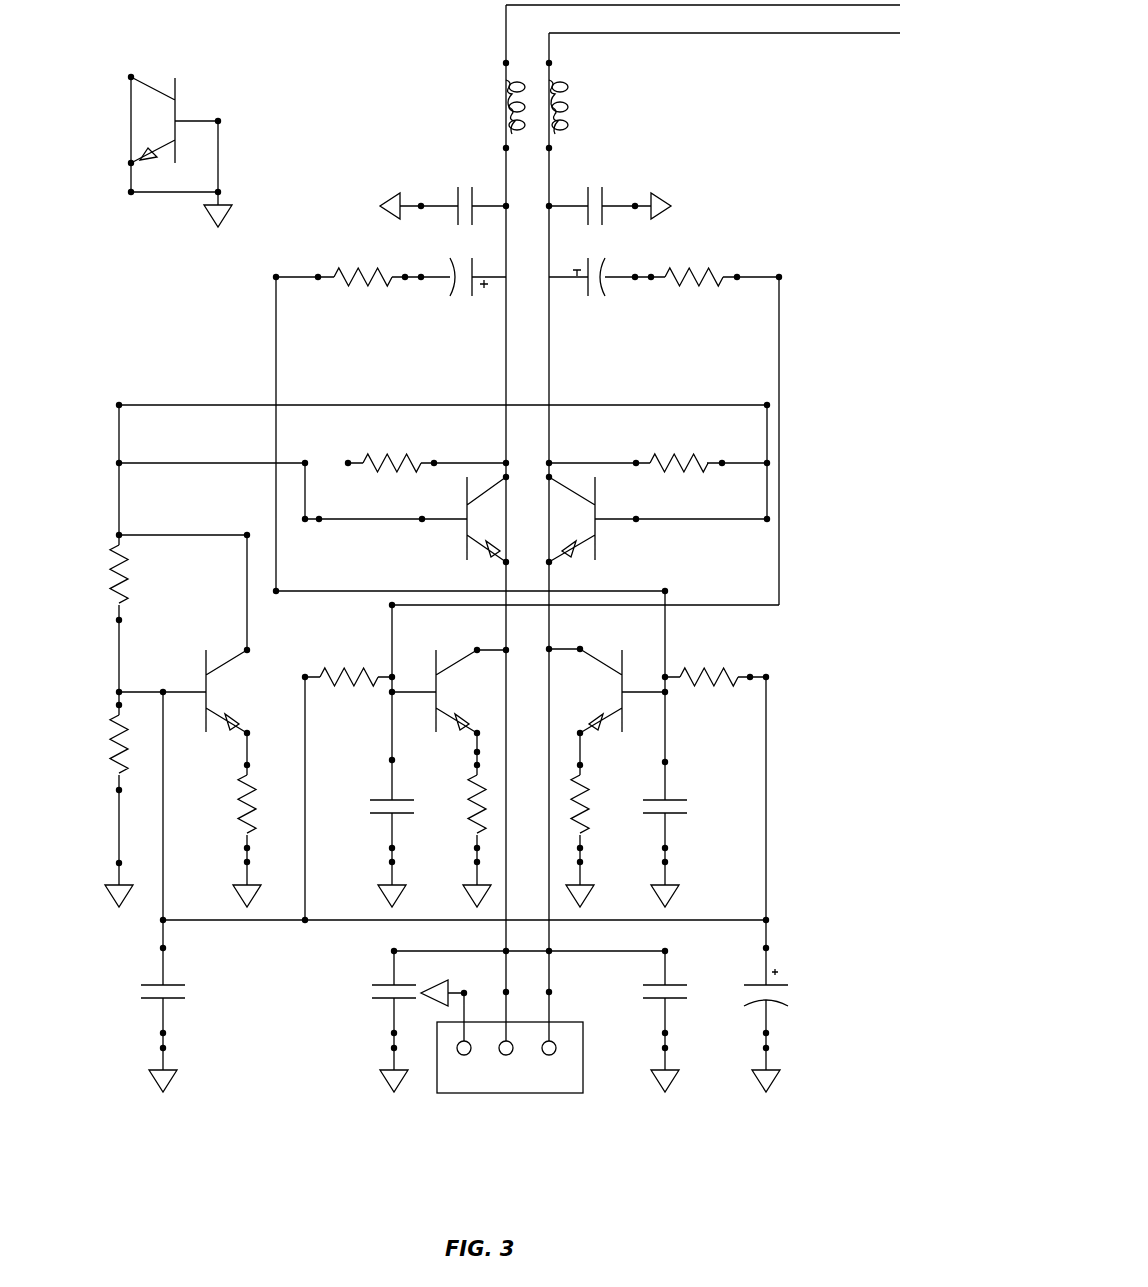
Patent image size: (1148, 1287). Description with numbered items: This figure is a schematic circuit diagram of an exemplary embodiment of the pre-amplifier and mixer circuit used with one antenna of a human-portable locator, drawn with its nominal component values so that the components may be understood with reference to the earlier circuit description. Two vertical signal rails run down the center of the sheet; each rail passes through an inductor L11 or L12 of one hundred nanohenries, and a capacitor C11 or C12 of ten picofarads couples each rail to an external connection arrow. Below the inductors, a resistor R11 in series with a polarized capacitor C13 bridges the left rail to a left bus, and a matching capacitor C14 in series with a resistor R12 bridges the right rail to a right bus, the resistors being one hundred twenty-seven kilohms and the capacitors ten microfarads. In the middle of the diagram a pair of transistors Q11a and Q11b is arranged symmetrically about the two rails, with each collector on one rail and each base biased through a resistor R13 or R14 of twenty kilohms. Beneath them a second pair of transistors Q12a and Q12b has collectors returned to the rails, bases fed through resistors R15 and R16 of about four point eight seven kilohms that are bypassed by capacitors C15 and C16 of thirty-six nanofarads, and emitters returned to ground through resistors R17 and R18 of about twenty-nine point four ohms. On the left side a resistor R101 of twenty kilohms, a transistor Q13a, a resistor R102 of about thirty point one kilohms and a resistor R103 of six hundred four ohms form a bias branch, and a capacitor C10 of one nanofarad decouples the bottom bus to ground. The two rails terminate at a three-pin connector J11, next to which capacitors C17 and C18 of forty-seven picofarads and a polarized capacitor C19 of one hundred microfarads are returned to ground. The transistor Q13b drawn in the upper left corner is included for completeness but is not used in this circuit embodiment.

The transistor Q13b is at (186, 150).
The inductor L11 is at (465, 110).
The inductor L12 is at (599, 110).
The capacitor C11 is at (443, 194).
The capacitor C12 is at (604, 194).
The resistor R11 is at (342, 281).
The capacitor C13 is at (455, 281).
The capacitor C14 is at (600, 281).
The resistor R12 is at (713, 281).
The resistor R13 is at (392, 462).
The resistor R14 is at (679, 462).
The transistor Q11a is at (455, 533).
The transistor Q11b is at (593, 533).
The resistor R101 is at (150, 584).
The transistor Q13a is at (183, 691).
The resistor R102 is at (145, 804).
The resistor R103 is at (218, 820).
The resistor R15 is at (348, 679).
The capacitor C15 is at (376, 832).
The transistor Q12a is at (447, 678).
The resistor R17 is at (463, 820).
The transistor Q12b is at (608, 678).
The resistor R18 is at (594, 820).
The resistor R16 is at (715, 679).
The capacitor C16 is at (682, 833).
The capacitor C10 is at (176, 1018).
The capacitor C17 is at (375, 1020).
The connector J11 is at (502, 1053).
The capacitor C18 is at (678, 1020).
The capacitor C19 is at (781, 1011).